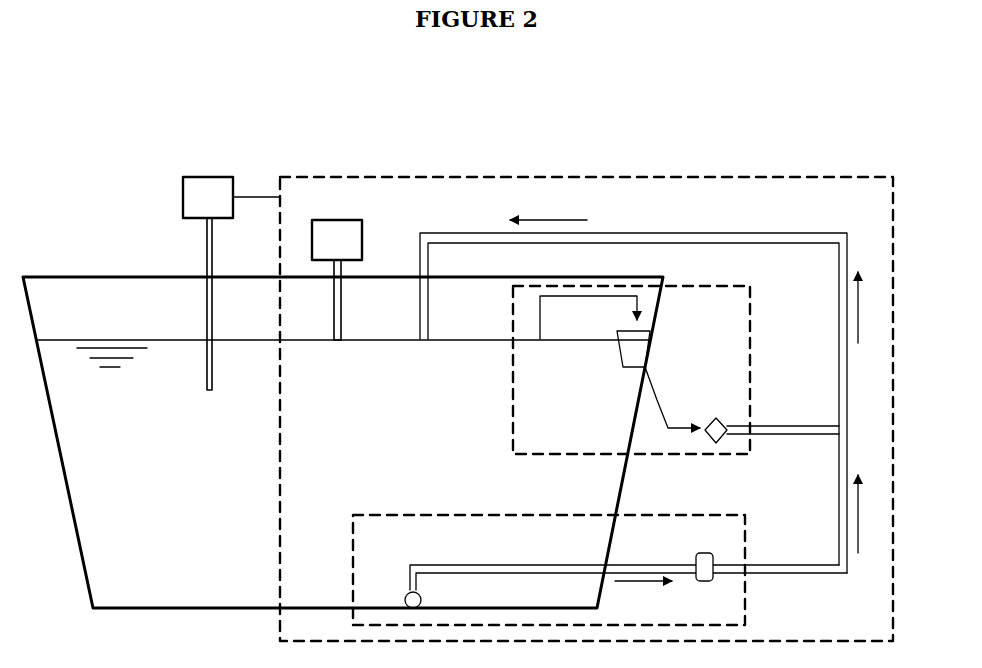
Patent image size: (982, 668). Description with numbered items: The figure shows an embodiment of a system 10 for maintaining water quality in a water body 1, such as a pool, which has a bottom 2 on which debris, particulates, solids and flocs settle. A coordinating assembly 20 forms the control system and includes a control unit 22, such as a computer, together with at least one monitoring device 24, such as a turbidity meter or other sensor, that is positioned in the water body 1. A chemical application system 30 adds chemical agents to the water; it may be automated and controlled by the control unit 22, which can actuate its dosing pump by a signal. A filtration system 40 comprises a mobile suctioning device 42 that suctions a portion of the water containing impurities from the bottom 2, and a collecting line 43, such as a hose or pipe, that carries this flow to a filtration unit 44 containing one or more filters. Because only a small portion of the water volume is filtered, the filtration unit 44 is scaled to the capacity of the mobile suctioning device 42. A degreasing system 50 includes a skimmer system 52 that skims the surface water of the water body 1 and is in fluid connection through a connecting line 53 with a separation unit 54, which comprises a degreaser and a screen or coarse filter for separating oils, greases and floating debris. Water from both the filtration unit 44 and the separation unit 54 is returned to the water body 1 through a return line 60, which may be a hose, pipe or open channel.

The water body 1 is at (343, 420).
The bottom 2 is at (248, 607).
The system 10 is at (255, 110).
The coordinating assembly 20 is at (202, 269).
The control unit 22 is at (183, 193).
The monitoring device 24 is at (205, 357).
The chemical application system 30 is at (362, 243).
The filtration system 40 is at (600, 546).
The mobile suctioning device 42 is at (405, 597).
The collecting line 43 is at (500, 565).
The filtration unit 44 is at (700, 553).
The degreasing system 50 is at (647, 370).
The skimmer system 52 is at (617, 348).
The connecting line 53 is at (655, 398).
The separation unit 54 is at (718, 418).
The return line 60 is at (658, 233).